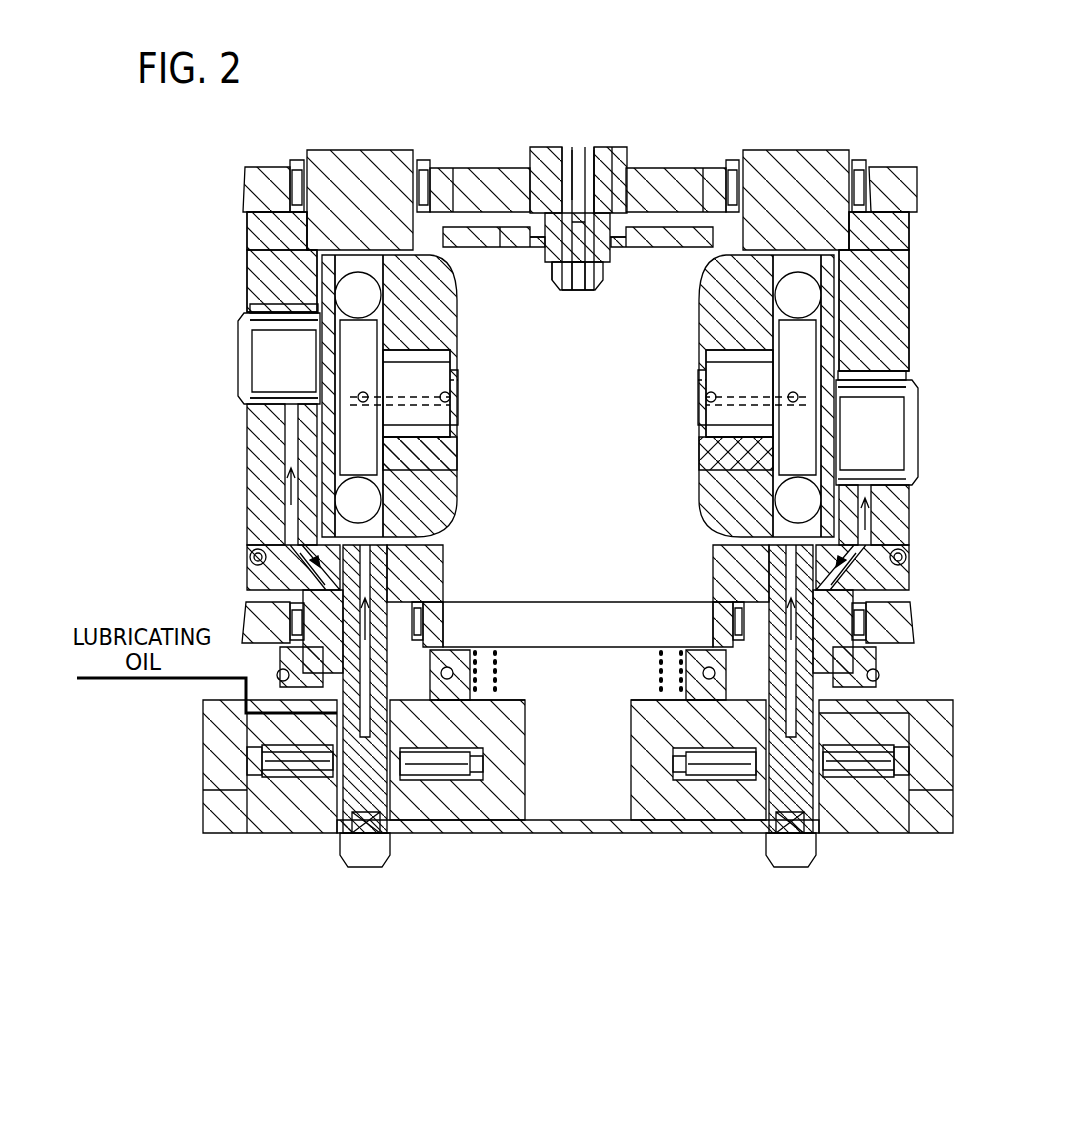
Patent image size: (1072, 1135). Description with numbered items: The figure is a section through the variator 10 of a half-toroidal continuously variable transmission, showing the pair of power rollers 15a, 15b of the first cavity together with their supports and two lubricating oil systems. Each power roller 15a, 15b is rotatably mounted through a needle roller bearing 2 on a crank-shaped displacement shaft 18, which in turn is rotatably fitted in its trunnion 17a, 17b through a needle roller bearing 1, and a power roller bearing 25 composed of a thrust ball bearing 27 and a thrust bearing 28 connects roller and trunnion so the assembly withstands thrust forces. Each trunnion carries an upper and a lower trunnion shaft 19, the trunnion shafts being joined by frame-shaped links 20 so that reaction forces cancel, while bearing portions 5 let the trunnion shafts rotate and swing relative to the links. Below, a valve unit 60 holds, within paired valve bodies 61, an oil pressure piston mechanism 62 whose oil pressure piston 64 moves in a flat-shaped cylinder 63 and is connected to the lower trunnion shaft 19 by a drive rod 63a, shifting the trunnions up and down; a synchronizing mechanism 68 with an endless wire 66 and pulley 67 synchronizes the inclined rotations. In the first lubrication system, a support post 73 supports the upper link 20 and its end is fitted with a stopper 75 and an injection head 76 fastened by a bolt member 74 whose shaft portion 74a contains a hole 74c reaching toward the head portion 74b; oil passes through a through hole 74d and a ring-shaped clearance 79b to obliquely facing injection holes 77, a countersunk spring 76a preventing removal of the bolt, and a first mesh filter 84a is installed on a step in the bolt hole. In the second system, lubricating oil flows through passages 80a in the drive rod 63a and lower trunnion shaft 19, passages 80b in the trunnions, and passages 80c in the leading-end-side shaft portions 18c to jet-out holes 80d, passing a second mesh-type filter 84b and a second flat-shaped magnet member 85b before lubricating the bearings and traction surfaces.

The variator 10 is at (850, 112).
The needle roller bearing 1 is at (252, 304).
The needle roller bearing 2 is at (440, 352).
The bearing portion 5 is at (265, 605).
The power roller 15a is at (716, 520).
The power roller 15b is at (442, 516).
The trunnion 17a is at (900, 500).
The trunnion 17b is at (262, 492).
The displacement shaft 18 is at (262, 343).
The leading-end-side shaft portion 18c is at (440, 470).
The trunnion shaft 19 is at (345, 168).
The link 20 is at (650, 180).
The power roller bearing 25 is at (190, 182).
The thrust ball bearing 27 is at (258, 225).
The thrust bearing 28 is at (258, 258).
The valve unit 60 is at (195, 730).
The valve body 61 is at (205, 796).
The oil pressure piston mechanism 62 is at (310, 881).
The cylinder 63 is at (262, 822).
The drive rod 63a is at (400, 566).
The oil pressure piston 64 is at (300, 822).
The endless wire 66 is at (496, 700).
The pulley 67 is at (476, 690).
The synchronizing mechanism 68 is at (566, 668).
The support post 73 is at (600, 165).
The bolt member 74 is at (578, 295).
The shaft portion 74a is at (615, 160).
The head portion 74b is at (603, 280).
The hole 74c is at (576, 165).
The through hole 74d is at (586, 295).
The stopper 75 is at (483, 250).
The injection head 76 is at (552, 280).
The countersunk spring 76a is at (507, 245).
The injection hole 77 is at (548, 260).
The ring-shaped clearance 79b is at (568, 295).
The passage 80a is at (300, 547).
The passage 80b is at (284, 462).
The passage 80c is at (458, 380).
The jet-out hole 80d is at (340, 392).
The first mesh filter 84a is at (537, 147).
The second mesh-type filter 84b is at (340, 405).
The second flat-shaped magnet member 85b is at (455, 440).